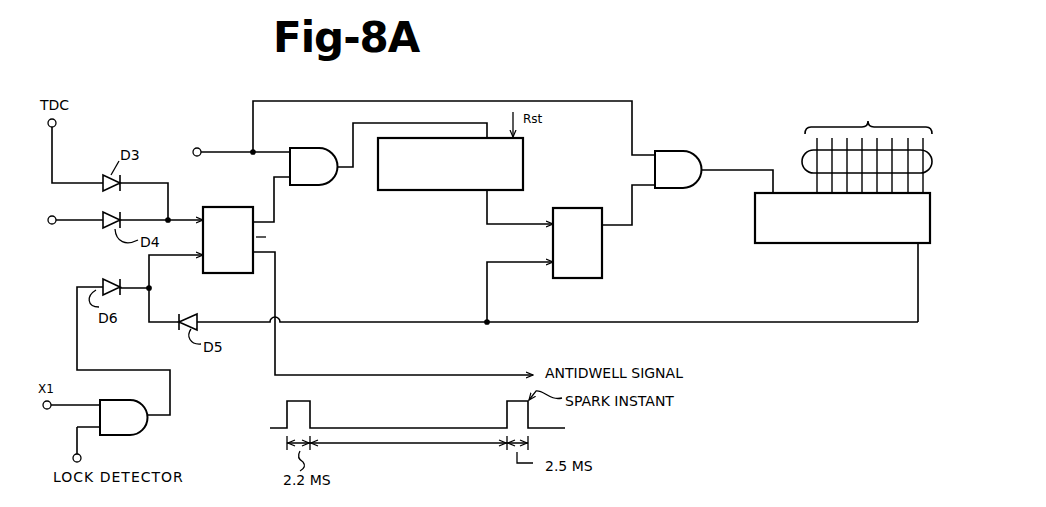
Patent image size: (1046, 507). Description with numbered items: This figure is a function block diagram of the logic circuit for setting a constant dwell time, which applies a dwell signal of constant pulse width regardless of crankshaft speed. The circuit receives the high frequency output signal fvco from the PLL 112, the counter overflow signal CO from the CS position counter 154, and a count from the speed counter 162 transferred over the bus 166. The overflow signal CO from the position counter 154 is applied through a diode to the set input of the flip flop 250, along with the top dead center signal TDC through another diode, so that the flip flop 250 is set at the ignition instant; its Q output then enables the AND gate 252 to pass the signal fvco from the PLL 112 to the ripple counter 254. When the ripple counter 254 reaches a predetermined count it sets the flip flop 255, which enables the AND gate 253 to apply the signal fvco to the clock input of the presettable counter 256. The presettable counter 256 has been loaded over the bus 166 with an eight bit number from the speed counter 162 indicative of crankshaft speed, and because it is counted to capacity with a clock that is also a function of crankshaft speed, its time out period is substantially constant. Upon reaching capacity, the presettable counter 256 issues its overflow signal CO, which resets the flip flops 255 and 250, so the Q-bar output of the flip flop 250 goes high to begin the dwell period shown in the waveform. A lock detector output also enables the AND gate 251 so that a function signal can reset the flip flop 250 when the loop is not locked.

The flip flop 250 is at (230, 194).
The AND gate 251 is at (147, 398).
The AND gate 252 is at (328, 134).
The AND gate 253 is at (688, 150).
The ripple counter 254 is at (440, 193).
The flip flop 255 is at (577, 207).
The presettable counter 256 is at (837, 243).
The speed counter 162 is at (868, 144).
The bus 166 is at (802, 160).
The PLL 112 is at (231, 134).
The CS position counter 154 is at (68, 238).